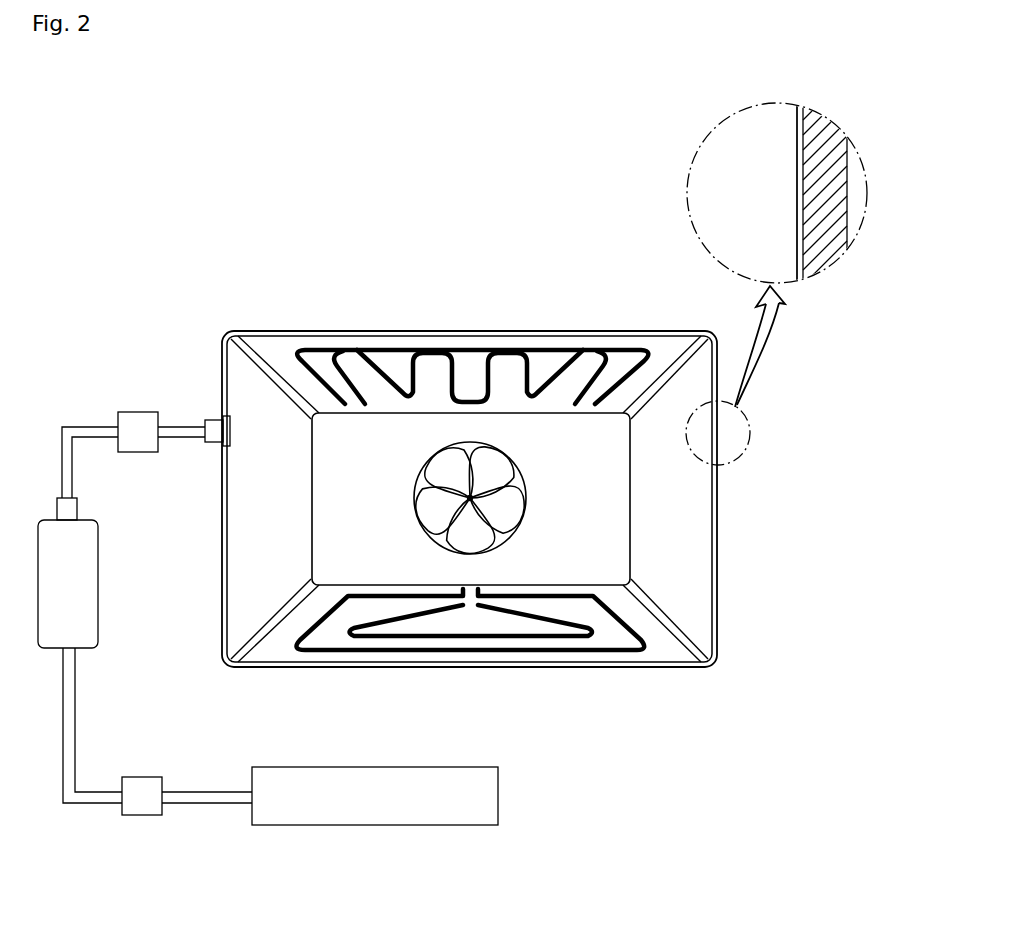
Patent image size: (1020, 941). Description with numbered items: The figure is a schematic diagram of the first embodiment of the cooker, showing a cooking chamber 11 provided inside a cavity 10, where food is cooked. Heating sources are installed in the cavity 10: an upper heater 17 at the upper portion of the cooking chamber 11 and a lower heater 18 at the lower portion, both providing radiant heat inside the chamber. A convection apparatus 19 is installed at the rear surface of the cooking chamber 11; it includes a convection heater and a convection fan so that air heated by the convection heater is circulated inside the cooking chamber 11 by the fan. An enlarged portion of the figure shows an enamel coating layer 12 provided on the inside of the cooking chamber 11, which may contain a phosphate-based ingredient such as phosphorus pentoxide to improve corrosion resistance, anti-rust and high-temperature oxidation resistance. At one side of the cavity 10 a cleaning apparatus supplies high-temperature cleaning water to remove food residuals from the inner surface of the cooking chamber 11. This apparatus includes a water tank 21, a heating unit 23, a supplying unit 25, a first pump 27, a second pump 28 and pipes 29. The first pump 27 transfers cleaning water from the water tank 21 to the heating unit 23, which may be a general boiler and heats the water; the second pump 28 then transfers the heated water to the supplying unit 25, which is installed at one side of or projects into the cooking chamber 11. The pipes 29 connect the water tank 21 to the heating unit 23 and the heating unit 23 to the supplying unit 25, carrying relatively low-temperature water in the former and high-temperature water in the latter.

The cavity 10 is at (512, 308).
The cooking chamber 11 is at (604, 515).
The enamel coating layer 12 is at (800, 140).
The upper heater 17 is at (398, 348).
The lower heater 18 is at (587, 652).
The convection apparatus 19 is at (556, 487).
The water tank 21 is at (375, 825).
The heating unit 23 is at (100, 572).
The supplying unit 25 is at (210, 420).
The first pump 27 is at (140, 815).
The second pump 28 is at (138, 412).
The pipes 29 is at (62, 447).